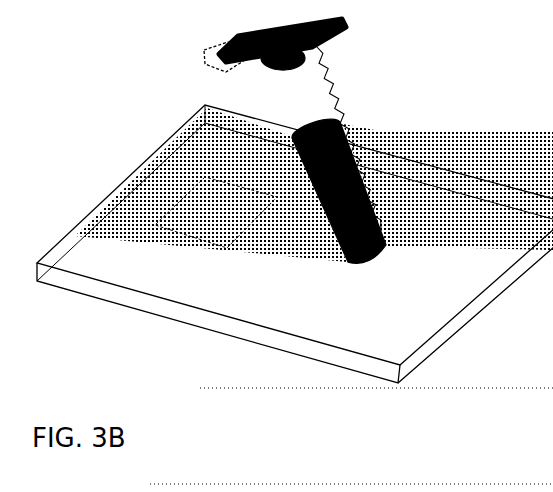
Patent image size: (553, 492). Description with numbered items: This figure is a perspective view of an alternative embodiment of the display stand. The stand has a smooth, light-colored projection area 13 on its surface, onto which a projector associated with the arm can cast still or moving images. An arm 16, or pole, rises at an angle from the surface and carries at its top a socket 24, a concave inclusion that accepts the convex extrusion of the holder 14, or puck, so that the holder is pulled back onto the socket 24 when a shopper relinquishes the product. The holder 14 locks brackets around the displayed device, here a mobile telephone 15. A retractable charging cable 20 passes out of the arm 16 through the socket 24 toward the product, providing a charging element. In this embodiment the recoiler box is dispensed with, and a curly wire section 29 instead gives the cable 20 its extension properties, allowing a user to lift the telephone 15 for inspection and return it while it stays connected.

The projection area 13 is at (200, 227).
The holder 14 is at (290, 66).
The mobile telephone 15 is at (226, 43).
The arm 16 is at (303, 170).
The retractable charging cable 20 is at (208, 63).
The socket 24 is at (337, 120).
The curly wire section 29 is at (378, 181).